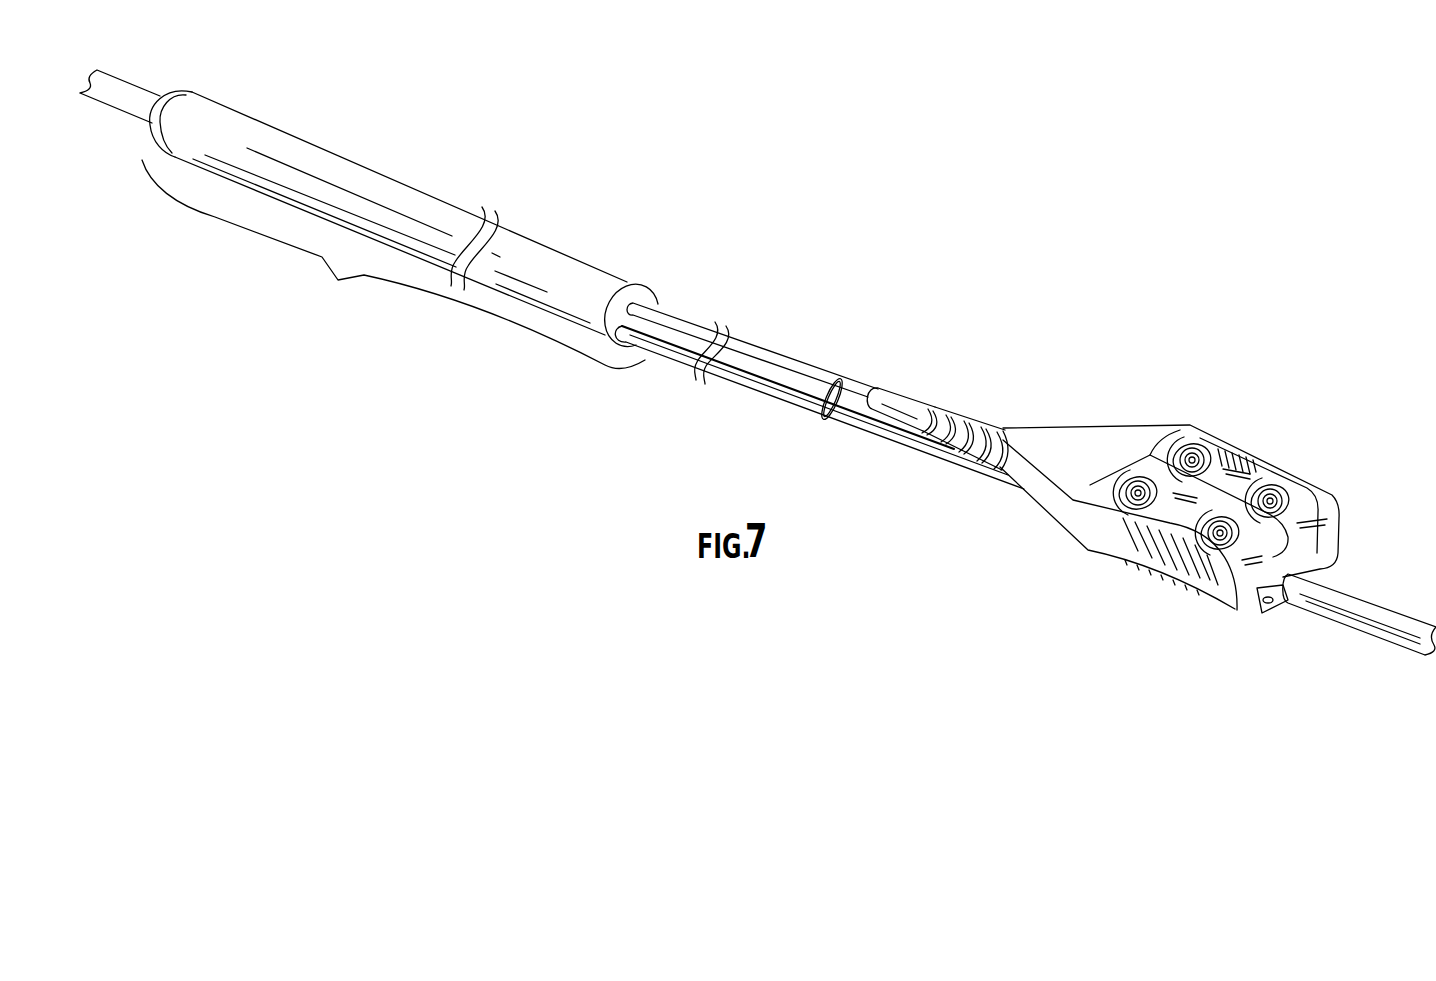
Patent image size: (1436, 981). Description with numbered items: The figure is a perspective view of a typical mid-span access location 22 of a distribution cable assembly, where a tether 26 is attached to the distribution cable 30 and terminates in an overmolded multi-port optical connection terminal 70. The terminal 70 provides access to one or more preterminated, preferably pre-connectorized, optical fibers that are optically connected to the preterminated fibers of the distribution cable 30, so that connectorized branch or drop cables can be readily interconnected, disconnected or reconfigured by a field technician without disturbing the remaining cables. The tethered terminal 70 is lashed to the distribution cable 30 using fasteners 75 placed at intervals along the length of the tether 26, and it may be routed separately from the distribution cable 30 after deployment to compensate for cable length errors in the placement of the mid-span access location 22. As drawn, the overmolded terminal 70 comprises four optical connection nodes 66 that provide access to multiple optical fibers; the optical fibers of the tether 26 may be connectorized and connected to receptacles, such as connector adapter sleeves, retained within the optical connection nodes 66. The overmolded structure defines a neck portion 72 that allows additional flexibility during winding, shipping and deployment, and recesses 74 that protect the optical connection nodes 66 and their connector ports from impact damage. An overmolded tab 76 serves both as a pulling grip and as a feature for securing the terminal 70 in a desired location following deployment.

The mid-span access location 22 is at (400, 230).
The tether 26 is at (888, 374).
The distribution cable 30 is at (1025, 509).
The optical connection nodes 66 is at (1202, 469).
The overmolded multi-port optical connection terminal 70 is at (1169, 479).
The neck portion 72 is at (965, 399).
The recesses 74 is at (1225, 619).
The fasteners 75 is at (823, 347).
The overmolded tab 76 is at (1269, 642).